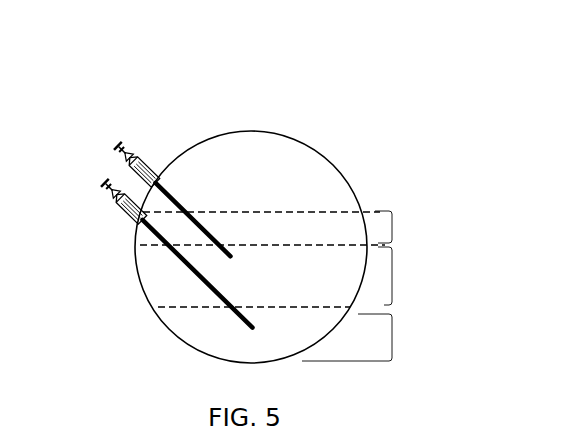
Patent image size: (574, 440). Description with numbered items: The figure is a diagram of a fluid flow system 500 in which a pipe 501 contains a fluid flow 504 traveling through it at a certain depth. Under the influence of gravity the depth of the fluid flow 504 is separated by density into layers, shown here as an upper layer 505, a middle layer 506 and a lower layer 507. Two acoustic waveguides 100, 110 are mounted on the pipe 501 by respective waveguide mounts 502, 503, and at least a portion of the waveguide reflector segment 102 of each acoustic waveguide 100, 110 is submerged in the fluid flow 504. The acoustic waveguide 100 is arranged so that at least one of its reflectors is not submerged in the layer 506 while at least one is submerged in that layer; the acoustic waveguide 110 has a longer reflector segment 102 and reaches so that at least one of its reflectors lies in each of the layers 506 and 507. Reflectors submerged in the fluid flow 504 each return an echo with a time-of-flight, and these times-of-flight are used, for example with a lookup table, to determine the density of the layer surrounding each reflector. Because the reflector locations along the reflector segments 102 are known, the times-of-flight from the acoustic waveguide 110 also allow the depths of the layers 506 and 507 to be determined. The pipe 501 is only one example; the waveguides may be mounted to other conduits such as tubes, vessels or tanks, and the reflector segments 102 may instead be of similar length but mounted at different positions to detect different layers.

The acoustic waveguide 100 is at (102, 148).
The acoustic waveguide 110 is at (91, 207).
The waveguide reflector segment 102 is at (181, 201).
The fluid flow system 500 is at (170, 58).
The pipe 501 is at (278, 131).
The waveguide mount 502 is at (93, 139).
The waveguide mount 503 is at (112, 208).
The fluid flow 504 is at (402, 286).
The fluid flow layer 505 is at (394, 229).
The fluid flow layer 506 is at (394, 279).
The fluid flow layer 507 is at (366, 337).